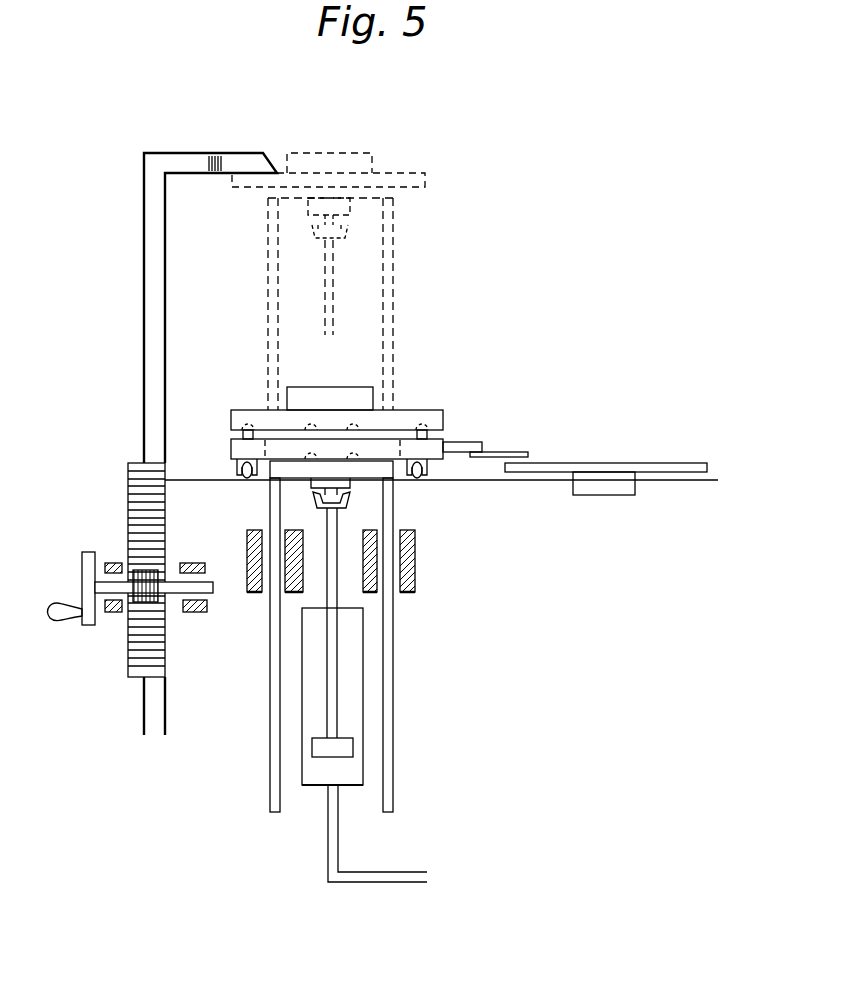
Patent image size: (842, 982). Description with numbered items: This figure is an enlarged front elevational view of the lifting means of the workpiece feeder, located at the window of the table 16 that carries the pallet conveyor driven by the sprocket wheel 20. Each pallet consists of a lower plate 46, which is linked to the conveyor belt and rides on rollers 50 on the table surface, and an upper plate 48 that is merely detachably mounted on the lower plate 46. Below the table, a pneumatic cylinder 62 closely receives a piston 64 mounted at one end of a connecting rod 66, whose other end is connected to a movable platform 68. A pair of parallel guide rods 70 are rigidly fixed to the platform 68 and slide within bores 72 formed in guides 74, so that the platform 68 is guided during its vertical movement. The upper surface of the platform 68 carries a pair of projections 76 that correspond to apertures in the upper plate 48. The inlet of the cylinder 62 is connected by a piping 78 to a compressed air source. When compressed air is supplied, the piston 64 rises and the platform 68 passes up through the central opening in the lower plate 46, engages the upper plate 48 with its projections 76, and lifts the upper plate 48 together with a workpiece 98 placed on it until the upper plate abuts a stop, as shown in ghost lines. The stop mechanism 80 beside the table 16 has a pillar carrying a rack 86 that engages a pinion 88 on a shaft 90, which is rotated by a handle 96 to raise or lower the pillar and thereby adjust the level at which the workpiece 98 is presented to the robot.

The table 16 is at (705, 474).
The driving sprocket wheel 20 is at (660, 463).
The lower plate 46 is at (231, 452).
The upper plate 48 is at (425, 175).
The rollers 50 is at (422, 474).
The pneumatic cylinder 62 is at (302, 765).
The piston 64 is at (340, 757).
The connecting rod 66 is at (340, 678).
The movable platform 68 is at (392, 198).
The guide rods 70 is at (393, 648).
The bores 72 is at (397, 596).
The guides 74 is at (415, 568).
The projections 76 is at (358, 455).
The piping 78 is at (380, 884).
The stop mechanism 80 is at (124, 423).
The rack 86 is at (128, 500).
The pinion 88 is at (145, 602).
The shaft 90 is at (178, 566).
The handle 96 is at (82, 566).
The workpiece 98 is at (352, 150).